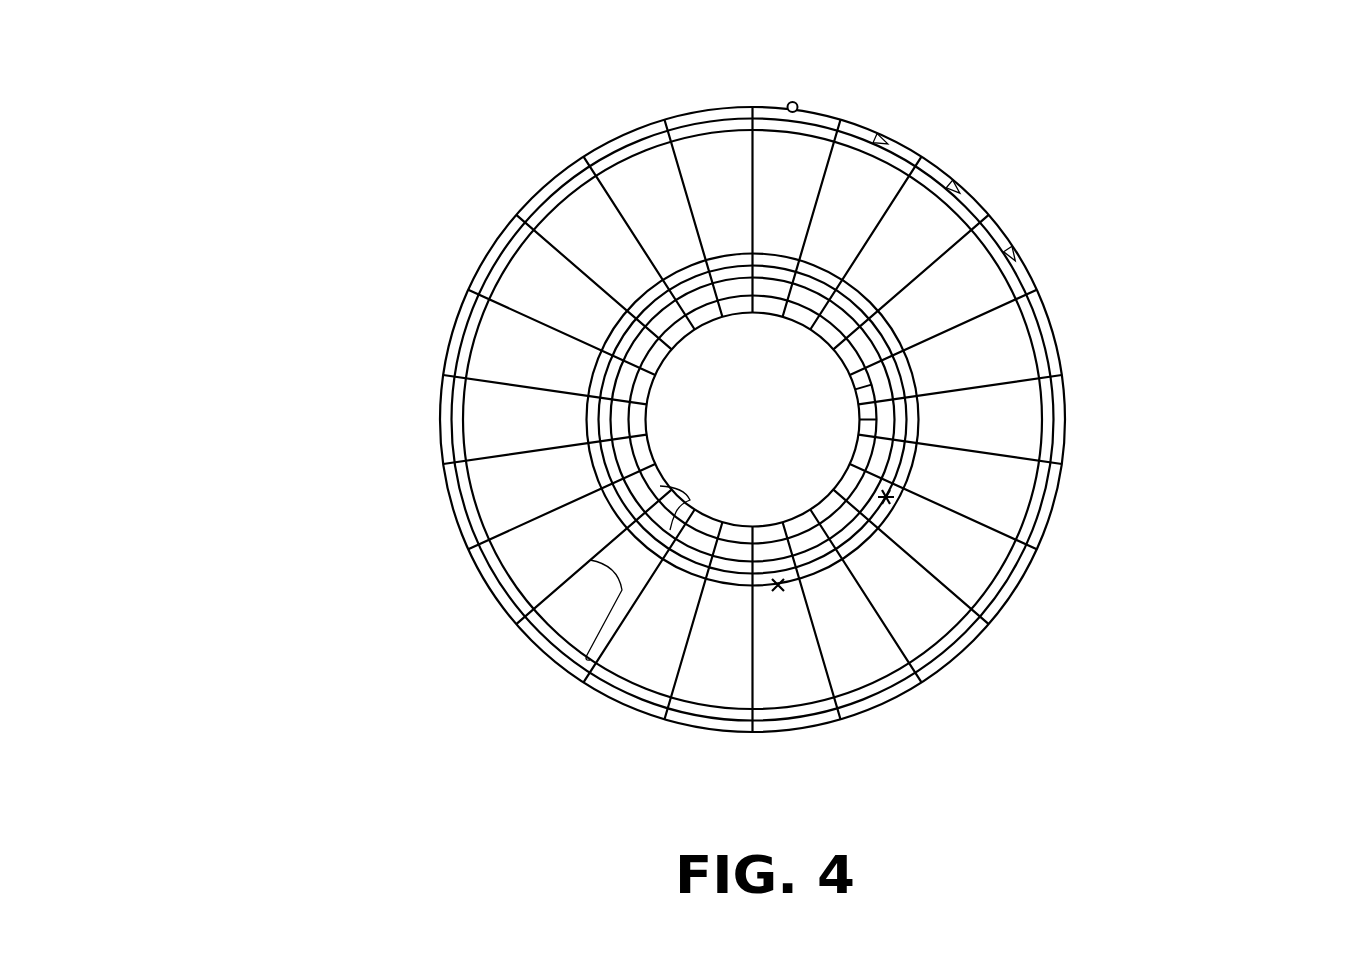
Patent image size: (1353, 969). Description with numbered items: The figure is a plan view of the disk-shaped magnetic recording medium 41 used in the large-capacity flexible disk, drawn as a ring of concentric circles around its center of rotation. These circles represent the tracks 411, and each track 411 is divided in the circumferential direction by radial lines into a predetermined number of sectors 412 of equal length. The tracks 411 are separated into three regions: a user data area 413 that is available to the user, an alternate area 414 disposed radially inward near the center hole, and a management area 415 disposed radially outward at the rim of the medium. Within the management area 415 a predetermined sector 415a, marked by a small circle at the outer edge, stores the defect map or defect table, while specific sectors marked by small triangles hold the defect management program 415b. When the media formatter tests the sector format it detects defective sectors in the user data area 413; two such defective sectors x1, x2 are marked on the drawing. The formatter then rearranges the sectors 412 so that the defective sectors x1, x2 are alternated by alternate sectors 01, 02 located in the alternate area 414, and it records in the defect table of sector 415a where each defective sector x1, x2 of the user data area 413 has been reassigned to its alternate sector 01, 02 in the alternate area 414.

The magnetic recording medium 41 is at (735, 405).
The tracks 411 is at (627, 432).
The sectors 412 is at (1075, 458).
The user data area 413 is at (590, 560).
The alternate area 414 is at (660, 486).
The management area 415 is at (921, 738).
The predetermined sector 415a is at (794, 102).
The defect management program 415b is at (895, 105).
The alternate sector 01 is at (861, 418).
The alternate sector 02 is at (857, 384).
The defective sector x1 is at (784, 590).
The defective sector x2 is at (893, 503).